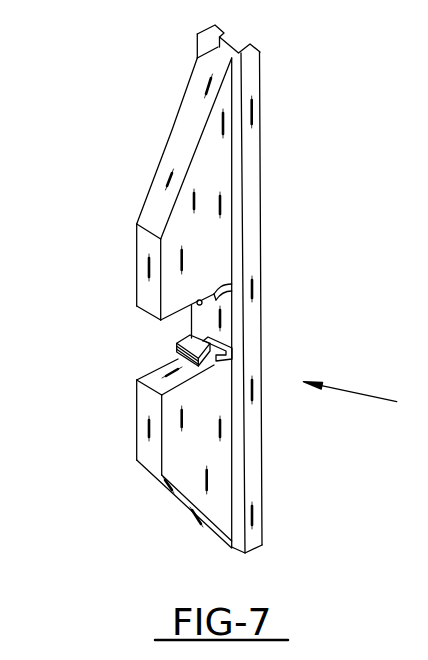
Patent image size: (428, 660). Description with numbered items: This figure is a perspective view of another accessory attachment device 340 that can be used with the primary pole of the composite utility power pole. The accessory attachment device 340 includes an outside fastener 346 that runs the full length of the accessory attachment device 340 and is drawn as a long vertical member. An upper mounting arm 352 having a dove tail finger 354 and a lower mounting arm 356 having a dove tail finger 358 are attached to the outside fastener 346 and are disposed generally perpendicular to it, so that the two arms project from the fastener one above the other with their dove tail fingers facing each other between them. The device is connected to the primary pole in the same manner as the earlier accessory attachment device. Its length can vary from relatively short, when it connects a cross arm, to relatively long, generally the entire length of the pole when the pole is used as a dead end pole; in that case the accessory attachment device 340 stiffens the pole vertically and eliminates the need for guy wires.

The accessory attachment device 340 is at (349, 385).
The outside fastener 346 is at (258, 86).
The upper mounting arm 352 is at (210, 222).
The dove tail finger 354 is at (224, 303).
The lower mounting arm 356 is at (215, 470).
The dove tail finger 358 is at (174, 345).